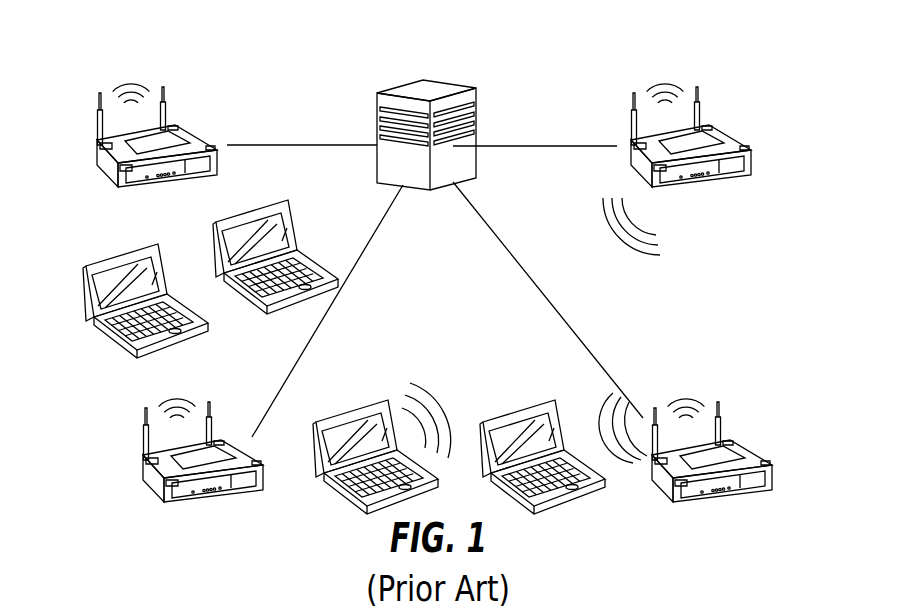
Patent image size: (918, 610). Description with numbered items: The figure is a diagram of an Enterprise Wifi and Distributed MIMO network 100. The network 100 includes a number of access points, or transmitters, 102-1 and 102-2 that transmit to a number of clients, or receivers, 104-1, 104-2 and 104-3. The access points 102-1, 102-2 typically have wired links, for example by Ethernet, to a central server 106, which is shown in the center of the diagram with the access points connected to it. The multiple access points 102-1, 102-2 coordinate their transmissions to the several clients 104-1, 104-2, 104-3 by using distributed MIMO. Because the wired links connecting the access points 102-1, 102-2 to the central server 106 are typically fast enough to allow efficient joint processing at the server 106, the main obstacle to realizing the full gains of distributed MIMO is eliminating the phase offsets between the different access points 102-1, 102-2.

The network 100 is at (217, 53).
The access point 102-1 is at (112, 165).
The access point 102-2 is at (707, 175).
The client 104-1 is at (152, 480).
The client 104-2 is at (172, 340).
The client 104-3 is at (513, 412).
The central server 106 is at (402, 90).